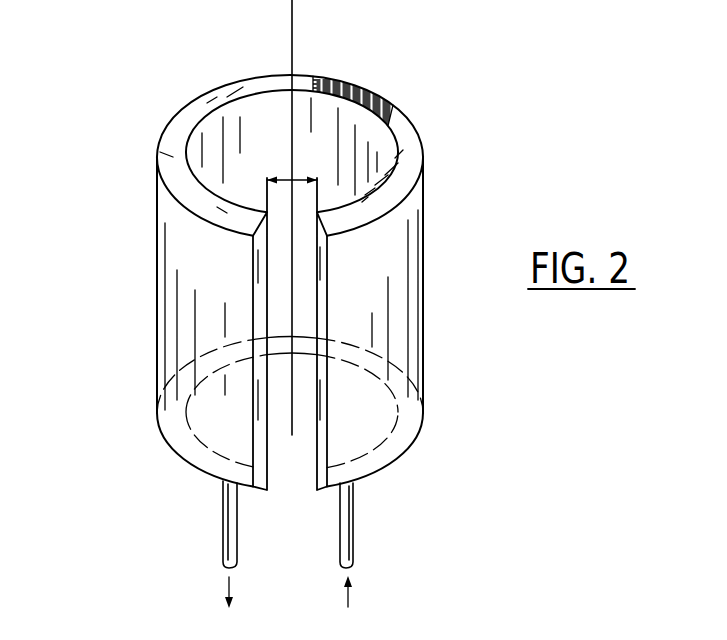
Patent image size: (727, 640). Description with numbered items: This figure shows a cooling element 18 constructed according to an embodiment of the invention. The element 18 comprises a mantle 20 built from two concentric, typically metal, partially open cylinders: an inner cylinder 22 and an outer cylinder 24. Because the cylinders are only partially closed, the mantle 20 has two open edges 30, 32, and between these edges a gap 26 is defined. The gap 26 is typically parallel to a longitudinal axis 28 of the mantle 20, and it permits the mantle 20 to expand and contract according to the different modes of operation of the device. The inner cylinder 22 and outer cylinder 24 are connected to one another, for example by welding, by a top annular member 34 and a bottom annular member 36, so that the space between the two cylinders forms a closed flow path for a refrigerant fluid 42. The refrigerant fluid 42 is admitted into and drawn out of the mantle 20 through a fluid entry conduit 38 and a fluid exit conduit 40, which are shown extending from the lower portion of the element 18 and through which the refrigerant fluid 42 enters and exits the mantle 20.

The cooling element 18 is at (470, 184).
The mantle 20 is at (157, 298).
The inner cylinder 22 is at (195, 170).
The outer cylinder 24 is at (167, 120).
The gap 26 is at (285, 178).
The longitudinal axis 28 is at (294, 53).
The open edge 30 is at (258, 470).
The open edge 32 is at (321, 470).
The top annular member 34 is at (413, 122).
The bottom annular member 36 is at (406, 463).
The fluid entry conduit 38 is at (353, 572).
The fluid exit conduit 40 is at (226, 568).
The refrigerant fluid 42 is at (370, 90).